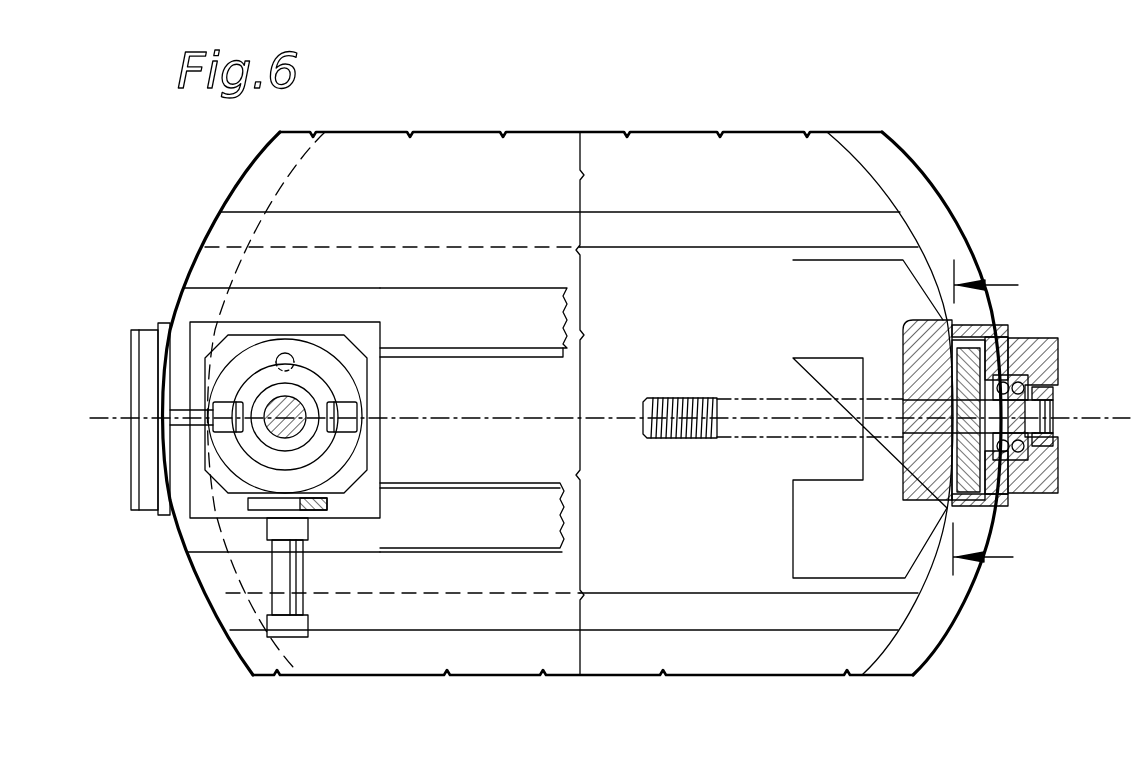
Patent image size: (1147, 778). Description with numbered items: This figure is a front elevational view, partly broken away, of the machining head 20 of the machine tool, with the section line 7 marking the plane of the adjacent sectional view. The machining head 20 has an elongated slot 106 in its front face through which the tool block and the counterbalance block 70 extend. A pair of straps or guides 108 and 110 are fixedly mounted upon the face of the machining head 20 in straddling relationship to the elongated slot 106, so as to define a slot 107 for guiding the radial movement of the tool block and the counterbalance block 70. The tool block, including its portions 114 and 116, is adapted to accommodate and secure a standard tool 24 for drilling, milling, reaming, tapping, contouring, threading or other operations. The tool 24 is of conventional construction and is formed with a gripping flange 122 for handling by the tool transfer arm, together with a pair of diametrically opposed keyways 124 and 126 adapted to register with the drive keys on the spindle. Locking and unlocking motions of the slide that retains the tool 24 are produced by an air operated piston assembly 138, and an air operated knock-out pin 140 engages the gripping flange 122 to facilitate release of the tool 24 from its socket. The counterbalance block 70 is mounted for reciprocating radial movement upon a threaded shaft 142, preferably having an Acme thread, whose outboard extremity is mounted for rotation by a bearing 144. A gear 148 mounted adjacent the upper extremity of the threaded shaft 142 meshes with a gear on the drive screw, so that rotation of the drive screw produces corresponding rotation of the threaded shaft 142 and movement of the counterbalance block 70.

The machining head 20 is at (852, 199).
The counterbalance block 70 is at (807, 281).
The strap or guide 110 is at (456, 308).
The slot 107 is at (522, 353).
The elongated slot 106 is at (498, 483).
The strap or guide 108 is at (495, 528).
The knock-out pin 140 is at (287, 352).
The gripping flange 122 is at (343, 371).
The tool block portion 116 is at (350, 409).
The keyway 126 is at (360, 424).
The tool block portion 114 is at (227, 408).
The keyway 124 is at (215, 427).
The tool 24 is at (293, 430).
The air operated piston assembly 138 is at (285, 577).
The threaded shaft 142 is at (662, 402).
The gear 148 is at (972, 368).
The bearing 144 is at (1014, 376).
The section line 7- 7 is at (997, 421).